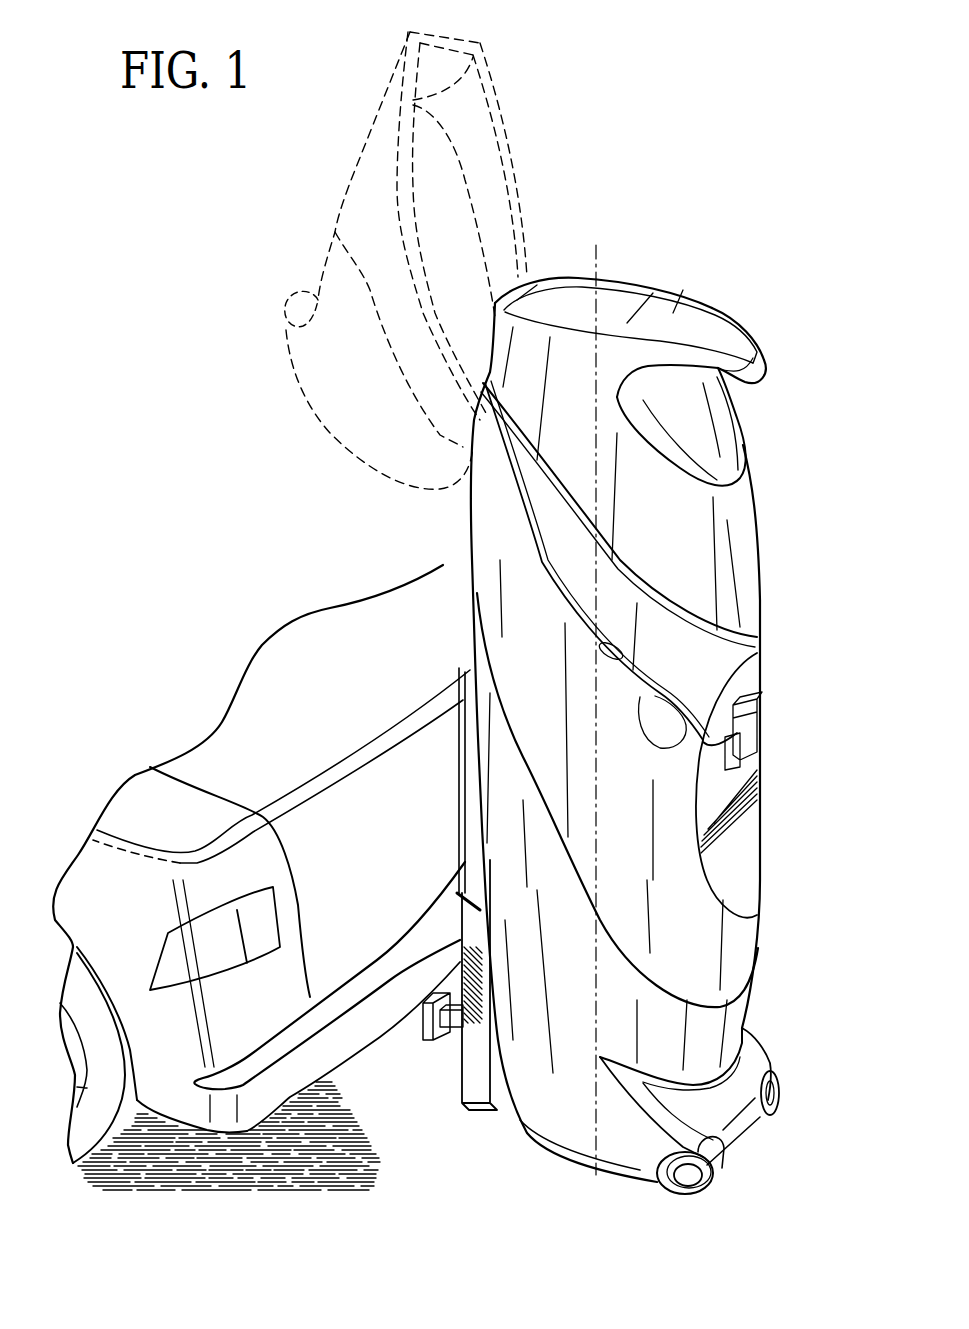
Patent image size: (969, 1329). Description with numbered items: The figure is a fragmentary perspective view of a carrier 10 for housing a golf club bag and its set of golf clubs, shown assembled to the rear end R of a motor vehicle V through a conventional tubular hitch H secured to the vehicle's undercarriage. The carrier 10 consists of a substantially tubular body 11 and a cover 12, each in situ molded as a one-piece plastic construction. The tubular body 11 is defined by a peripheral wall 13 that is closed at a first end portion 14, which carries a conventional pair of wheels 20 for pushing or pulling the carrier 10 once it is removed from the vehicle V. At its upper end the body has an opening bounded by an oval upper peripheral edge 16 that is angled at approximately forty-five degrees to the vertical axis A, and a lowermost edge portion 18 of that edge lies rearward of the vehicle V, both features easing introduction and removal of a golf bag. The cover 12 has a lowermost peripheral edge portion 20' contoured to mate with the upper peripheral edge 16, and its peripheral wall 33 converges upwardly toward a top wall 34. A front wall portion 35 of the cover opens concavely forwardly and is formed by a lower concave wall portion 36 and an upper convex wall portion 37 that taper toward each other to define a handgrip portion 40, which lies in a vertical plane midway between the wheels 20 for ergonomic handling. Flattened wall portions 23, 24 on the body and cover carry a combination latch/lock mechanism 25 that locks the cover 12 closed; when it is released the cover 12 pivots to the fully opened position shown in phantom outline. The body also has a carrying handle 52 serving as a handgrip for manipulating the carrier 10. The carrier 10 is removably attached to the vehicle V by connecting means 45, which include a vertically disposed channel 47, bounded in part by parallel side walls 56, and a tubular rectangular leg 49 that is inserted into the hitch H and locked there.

The carrier 10 is at (740, 207).
The tubular body 11 is at (772, 899).
The cover 12 is at (507, 117).
The peripheral wall 13 is at (696, 942).
The first end portion 14 is at (577, 1135).
The upper peripheral edge 16 is at (613, 663).
The lowermost edge portion 18 is at (703, 748).
The wheels 20 is at (615, 708).
The lowermost peripheral edge portion 20' is at (619, 560).
The flattened wall portion 23 is at (740, 857).
The flattened wall portion 24 is at (748, 680).
The combination latch/lock mechanism 25 is at (758, 721).
The peripheral wall 33 is at (668, 530).
The top wall 34 is at (548, 290).
The front wall portion 35 is at (337, 247).
The lower concave wall portion 36 is at (680, 370).
The upper convex wall portion 37 is at (678, 307).
The handgrip portion 40 is at (735, 328).
The connecting means 45 is at (427, 1147).
The channel 47 is at (483, 1097).
The tubular rectangular leg 49 is at (458, 1027).
The carrying handle 52 is at (465, 790).
The side walls 56 is at (473, 930).
The vertical axis A is at (596, 255).
The motor vehicle V is at (205, 704).
The tubular hitch H is at (410, 1028).
The rear end R is at (325, 1072).